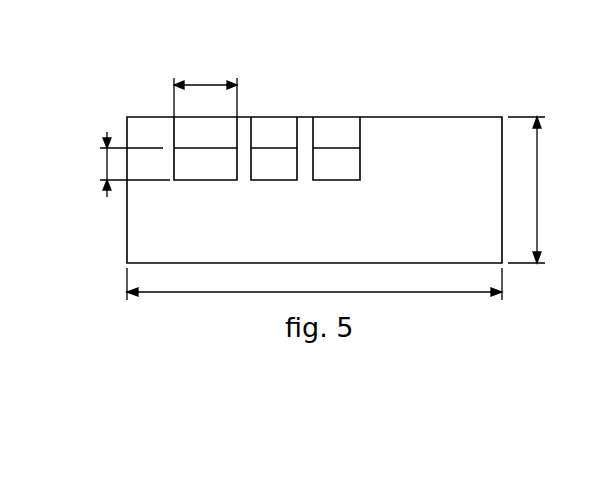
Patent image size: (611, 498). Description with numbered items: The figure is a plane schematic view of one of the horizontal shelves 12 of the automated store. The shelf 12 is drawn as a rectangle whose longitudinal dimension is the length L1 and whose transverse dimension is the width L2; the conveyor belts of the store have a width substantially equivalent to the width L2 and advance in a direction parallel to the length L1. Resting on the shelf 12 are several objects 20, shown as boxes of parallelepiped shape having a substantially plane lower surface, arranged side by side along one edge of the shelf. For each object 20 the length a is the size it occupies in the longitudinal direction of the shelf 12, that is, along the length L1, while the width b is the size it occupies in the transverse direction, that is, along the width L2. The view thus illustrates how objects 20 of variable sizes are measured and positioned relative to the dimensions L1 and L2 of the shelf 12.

The shelf 12 is at (490, 252).
The object 20 is at (230, 128).
The length of the object a is at (205, 88).
The width of the object b is at (128, 164).
The length of the shelf L1 is at (314, 284).
The width of the shelf L2 is at (526, 190).